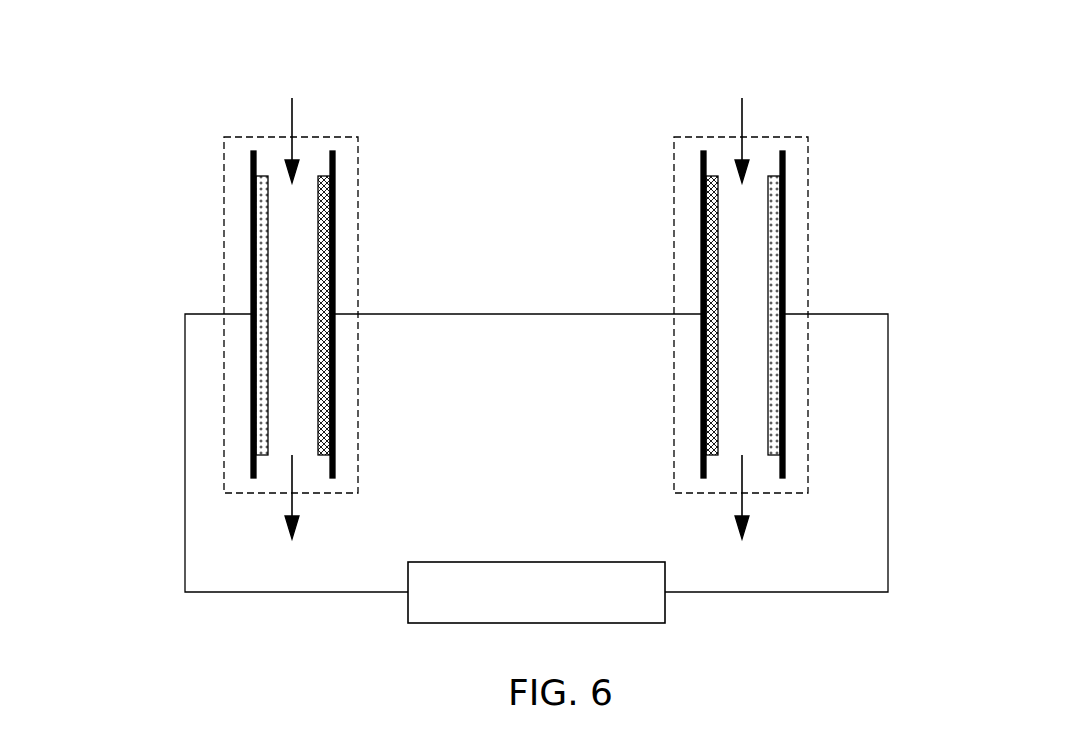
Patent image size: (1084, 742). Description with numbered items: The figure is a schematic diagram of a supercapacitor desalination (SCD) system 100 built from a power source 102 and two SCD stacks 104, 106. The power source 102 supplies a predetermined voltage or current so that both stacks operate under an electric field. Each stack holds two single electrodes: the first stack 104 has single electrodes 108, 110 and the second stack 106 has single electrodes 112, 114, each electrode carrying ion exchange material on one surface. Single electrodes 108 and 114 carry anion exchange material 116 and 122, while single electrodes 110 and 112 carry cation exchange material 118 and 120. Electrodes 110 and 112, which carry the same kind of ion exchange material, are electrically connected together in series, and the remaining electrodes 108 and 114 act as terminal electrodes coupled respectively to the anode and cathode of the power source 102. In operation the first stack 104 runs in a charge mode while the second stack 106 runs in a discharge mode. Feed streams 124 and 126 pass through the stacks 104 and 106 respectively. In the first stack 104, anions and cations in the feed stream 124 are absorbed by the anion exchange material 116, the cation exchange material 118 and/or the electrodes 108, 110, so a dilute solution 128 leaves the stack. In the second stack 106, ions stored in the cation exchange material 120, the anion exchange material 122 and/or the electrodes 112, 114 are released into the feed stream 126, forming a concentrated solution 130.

The SCD system 100 is at (187, 88).
The power source 102 is at (573, 562).
The SCD stack 104 is at (224, 222).
The SCD stack 106 is at (674, 222).
The single electrode 108 is at (252, 158).
The single electrode 110 is at (335, 164).
The single electrode 112 is at (702, 158).
The single electrode 114 is at (785, 164).
The anion exchange material 116 is at (268, 262).
The cation exchange material 118 is at (319, 397).
The cation exchange material 120 is at (718, 262).
The anion exchange material 122 is at (769, 397).
The feed stream 124 is at (292, 120).
The feed stream 126 is at (742, 120).
The dilute solution 128 is at (283, 508).
The concentrated solution 130 is at (733, 508).